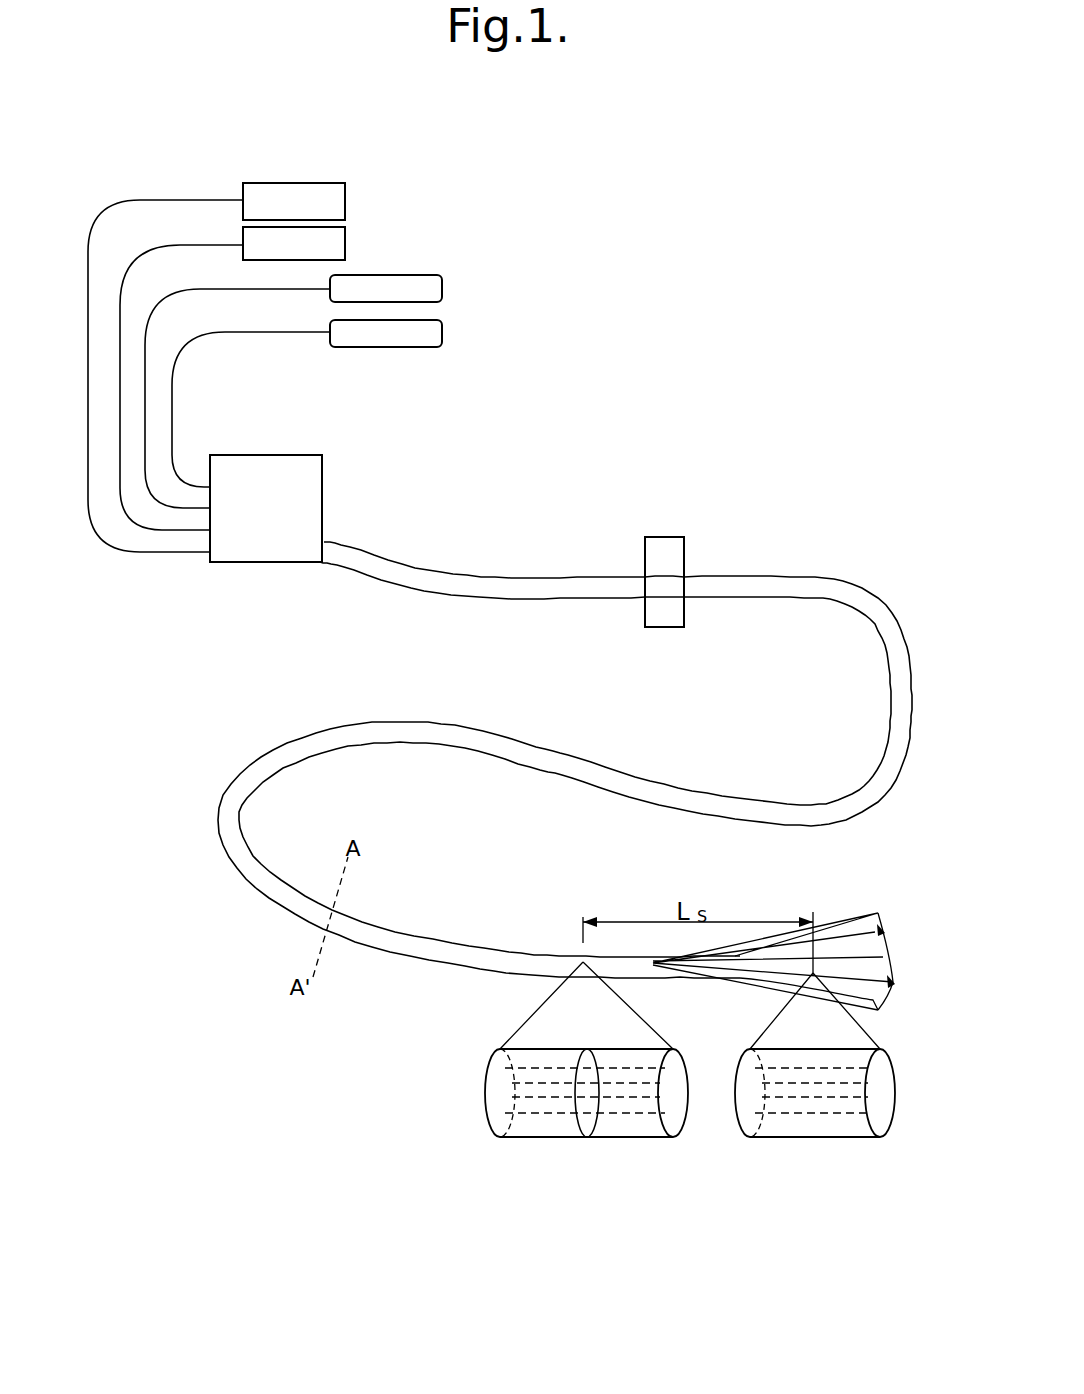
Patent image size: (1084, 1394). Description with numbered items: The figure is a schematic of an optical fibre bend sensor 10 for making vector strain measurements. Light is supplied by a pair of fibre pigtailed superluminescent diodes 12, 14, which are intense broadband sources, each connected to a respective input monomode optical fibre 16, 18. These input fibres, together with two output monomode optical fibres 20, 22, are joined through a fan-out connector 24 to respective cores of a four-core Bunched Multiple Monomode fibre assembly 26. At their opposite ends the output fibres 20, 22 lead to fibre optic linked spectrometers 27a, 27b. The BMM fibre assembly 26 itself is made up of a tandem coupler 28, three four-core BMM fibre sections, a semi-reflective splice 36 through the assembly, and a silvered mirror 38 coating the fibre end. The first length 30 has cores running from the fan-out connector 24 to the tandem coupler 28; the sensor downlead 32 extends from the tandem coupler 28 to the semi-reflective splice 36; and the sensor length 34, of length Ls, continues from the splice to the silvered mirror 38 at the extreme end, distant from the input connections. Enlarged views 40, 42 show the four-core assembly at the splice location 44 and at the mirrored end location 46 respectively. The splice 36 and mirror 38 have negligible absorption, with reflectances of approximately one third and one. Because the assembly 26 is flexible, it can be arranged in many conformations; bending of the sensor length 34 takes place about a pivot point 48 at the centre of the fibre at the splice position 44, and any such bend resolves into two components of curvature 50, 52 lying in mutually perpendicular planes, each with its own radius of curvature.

The optical fibre bend sensor 10 is at (290, 84).
The superluminescent diode 12 is at (346, 205).
The superluminescent diode 14 is at (346, 240).
The input monomode optical fibre 16 is at (140, 200).
The input monomode optical fibre 18 is at (186, 245).
The output monomode optical fibre 20 is at (212, 289).
The output monomode optical fibre 22 is at (244, 332).
The fan-out connector 24 is at (278, 510).
The Bunched Multiple Monomode (BMM) fibre assembly 26 is at (460, 566).
The fibre optic linked spectrometer 27a is at (443, 289).
The fibre optic linked spectrometer 27b is at (443, 333).
The tandem coupler 28 is at (687, 556).
The first length 30 is at (406, 592).
The sensor downlead 32 is at (912, 688).
The sensor length 34 is at (652, 963).
The semi-reflective splice 36 is at (590, 1122).
The silvered mirror 38 is at (895, 1082).
The enlarged view 40 is at (525, 1148).
The enlarged view 42 is at (847, 1148).
The splice location 44 is at (583, 917).
The mirrored end location 46 is at (813, 912).
The pivot point 48 is at (583, 957).
The component of curvature 50 is at (882, 922).
The component of curvature 52 is at (897, 988).